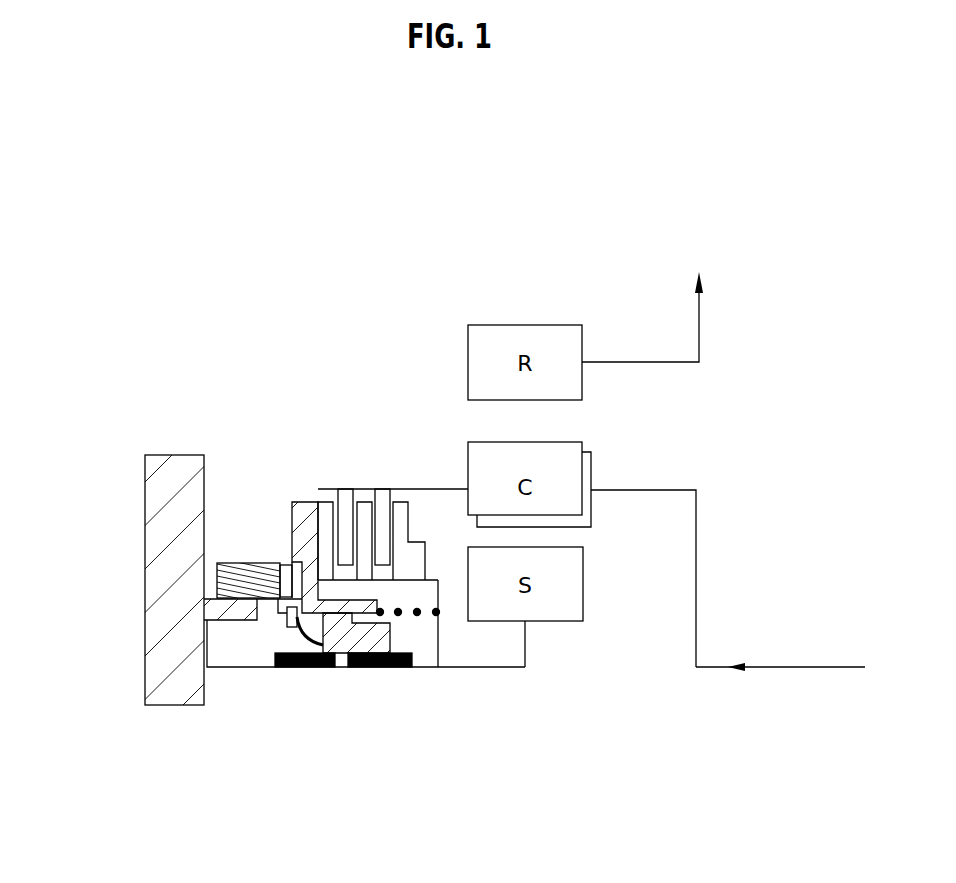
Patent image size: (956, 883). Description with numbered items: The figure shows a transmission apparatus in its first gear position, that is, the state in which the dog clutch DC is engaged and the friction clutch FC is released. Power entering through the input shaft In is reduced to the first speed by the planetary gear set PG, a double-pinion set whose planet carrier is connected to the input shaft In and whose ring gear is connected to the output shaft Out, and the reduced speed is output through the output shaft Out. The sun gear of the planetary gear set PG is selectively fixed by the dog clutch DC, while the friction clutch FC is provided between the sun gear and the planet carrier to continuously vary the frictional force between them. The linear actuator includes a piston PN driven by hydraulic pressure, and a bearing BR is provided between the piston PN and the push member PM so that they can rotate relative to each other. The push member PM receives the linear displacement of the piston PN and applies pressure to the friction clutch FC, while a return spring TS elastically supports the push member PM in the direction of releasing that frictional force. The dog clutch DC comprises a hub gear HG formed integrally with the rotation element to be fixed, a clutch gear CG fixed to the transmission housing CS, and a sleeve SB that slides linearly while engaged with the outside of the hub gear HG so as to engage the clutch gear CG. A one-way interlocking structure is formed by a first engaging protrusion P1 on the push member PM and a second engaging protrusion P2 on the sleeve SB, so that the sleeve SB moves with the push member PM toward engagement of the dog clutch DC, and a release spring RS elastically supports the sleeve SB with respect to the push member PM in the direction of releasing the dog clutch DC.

The transmission housing CS is at (177, 474).
The bearing BR is at (285, 563).
The push member PM is at (308, 513).
The second engaging protrusion P2 is at (332, 598).
The friction clutch FC is at (378, 496).
The return spring TS is at (435, 607).
The piston PN is at (220, 568).
The release spring RS is at (315, 642).
The clutch gear CG is at (262, 668).
The sleeve SB is at (343, 632).
The hub gear HG is at (403, 655).
The dog clutch DC is at (403, 788).
The first engaging protrusion P1 is at (377, 620).
The planetary gear set PG is at (523, 315).
The output shaft Out is at (699, 330).
The input shaft In is at (783, 668).